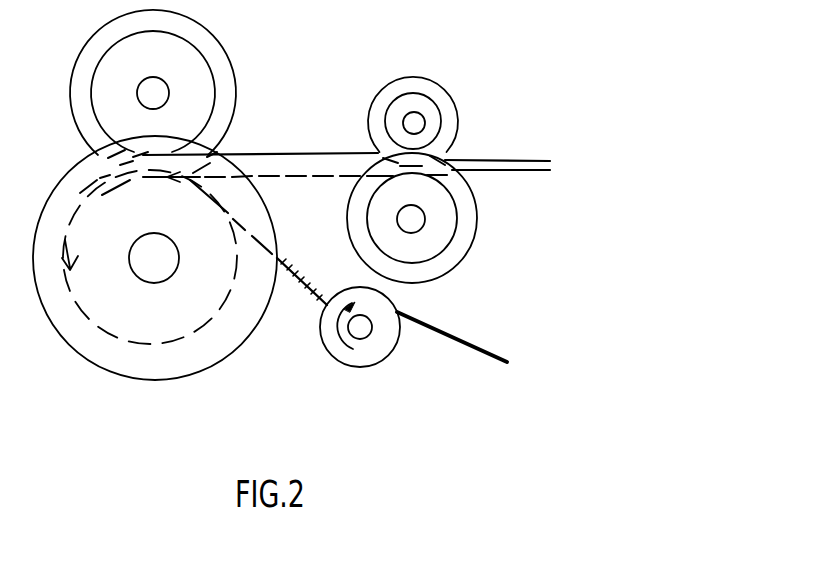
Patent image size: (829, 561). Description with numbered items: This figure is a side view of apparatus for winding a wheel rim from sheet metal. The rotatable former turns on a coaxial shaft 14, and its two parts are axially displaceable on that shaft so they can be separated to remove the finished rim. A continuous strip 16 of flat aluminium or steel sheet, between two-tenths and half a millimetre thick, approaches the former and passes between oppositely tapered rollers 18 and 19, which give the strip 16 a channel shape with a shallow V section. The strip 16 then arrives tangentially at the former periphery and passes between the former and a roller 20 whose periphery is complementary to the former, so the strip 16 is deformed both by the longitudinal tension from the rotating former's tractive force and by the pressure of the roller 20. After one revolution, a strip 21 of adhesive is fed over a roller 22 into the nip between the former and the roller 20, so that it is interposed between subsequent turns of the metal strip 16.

The coaxial shaft 14 is at (163, 273).
The strip 16 is at (298, 157).
The tapered roller 18 is at (428, 85).
The tapered roller 19 is at (462, 240).
The roller 20 is at (205, 40).
The strip of adhesive 21 is at (308, 298).
The roller 22 is at (380, 345).